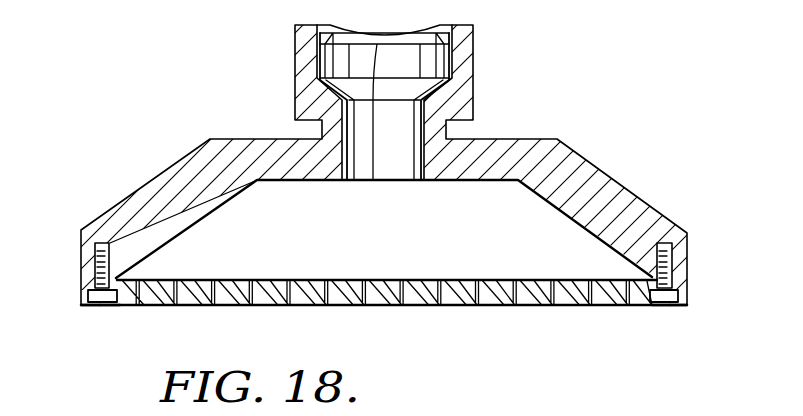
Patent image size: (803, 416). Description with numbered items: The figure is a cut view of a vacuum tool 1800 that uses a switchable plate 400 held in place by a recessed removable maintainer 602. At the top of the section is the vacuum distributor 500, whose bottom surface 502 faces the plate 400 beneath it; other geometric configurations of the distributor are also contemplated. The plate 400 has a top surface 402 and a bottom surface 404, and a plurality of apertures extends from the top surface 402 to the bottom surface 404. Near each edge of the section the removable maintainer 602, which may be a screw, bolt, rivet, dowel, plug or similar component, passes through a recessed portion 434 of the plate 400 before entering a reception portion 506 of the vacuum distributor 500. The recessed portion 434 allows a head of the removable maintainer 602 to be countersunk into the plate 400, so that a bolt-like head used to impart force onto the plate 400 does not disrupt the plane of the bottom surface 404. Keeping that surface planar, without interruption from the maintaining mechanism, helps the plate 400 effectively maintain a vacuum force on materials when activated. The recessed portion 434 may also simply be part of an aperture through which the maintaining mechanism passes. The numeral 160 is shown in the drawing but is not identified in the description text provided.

The vacuum tool 1800 is at (150, 83).
The vacuum distributor 500 is at (517, 140).
The reception portion 506 is at (102, 243).
The bottom surface 502 is at (76, 280).
The recessed portion 434 is at (92, 306).
The recessed removable maintainer 602 is at (108, 306).
The top surface 402 is at (345, 277).
The bottom surface 404 is at (345, 308).
The membrane 160 is at (437, 307).
The plate 400 is at (537, 307).